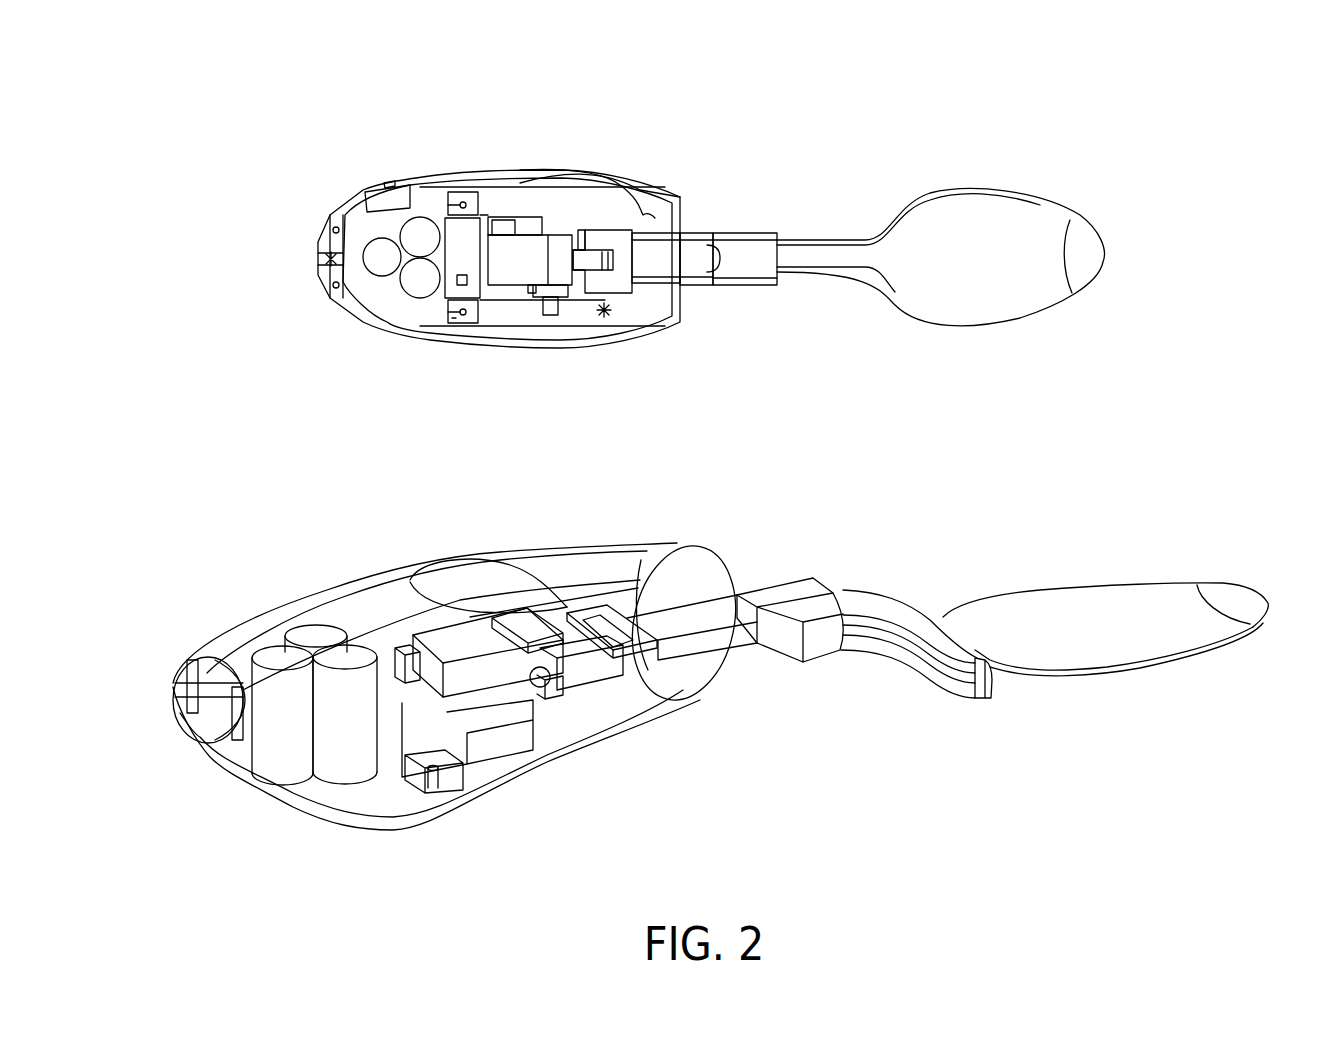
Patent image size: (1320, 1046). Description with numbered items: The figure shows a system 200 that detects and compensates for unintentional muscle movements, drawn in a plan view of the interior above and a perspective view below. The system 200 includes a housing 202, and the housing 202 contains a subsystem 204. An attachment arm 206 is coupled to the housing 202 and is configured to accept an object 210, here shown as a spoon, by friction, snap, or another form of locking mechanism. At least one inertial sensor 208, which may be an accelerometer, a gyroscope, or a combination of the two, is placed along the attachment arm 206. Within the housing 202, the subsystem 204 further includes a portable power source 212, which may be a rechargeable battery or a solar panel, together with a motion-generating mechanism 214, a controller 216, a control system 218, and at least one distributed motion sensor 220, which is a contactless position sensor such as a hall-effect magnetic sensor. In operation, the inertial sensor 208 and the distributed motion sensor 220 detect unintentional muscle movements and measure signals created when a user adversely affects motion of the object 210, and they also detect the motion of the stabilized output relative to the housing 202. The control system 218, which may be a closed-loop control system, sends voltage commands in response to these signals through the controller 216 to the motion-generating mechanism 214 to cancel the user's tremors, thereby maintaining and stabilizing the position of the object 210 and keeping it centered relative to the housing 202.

The system 200 is at (1174, 830).
The housing 202 is at (133, 633).
The subsystem 204 is at (608, 218).
The attachment arm 206 is at (790, 284).
The inertial sensor 208 is at (985, 702).
The object 210 is at (1209, 667).
The portable power source 212 is at (256, 764).
The motion-generating mechanism 214 is at (497, 245).
The controller 216 is at (533, 732).
The control system 218 is at (518, 736).
The distributed motion sensor 220 is at (538, 319).